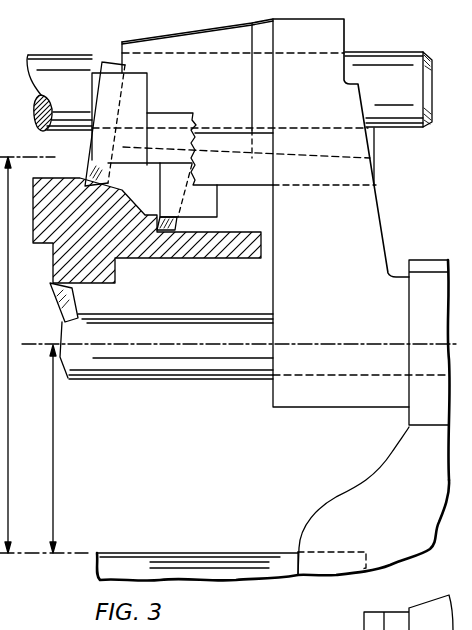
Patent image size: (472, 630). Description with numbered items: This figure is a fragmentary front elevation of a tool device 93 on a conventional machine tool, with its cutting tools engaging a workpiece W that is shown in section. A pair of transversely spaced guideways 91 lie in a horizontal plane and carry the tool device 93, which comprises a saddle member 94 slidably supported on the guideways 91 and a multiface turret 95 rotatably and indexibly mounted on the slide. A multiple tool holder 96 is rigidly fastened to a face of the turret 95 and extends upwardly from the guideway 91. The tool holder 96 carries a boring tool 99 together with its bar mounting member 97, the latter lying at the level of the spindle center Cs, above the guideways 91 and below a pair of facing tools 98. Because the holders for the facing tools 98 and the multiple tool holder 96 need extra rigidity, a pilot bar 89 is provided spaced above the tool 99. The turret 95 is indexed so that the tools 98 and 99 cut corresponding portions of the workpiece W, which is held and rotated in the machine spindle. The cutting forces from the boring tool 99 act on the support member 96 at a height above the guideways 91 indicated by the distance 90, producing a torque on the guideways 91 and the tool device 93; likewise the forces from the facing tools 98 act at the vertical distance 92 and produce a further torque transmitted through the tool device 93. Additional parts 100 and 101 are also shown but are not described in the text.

The pilot bar 89 is at (388, 35).
The distance 90 is at (54, 510).
The guideways 91 is at (252, 577).
The vertical distance 92 is at (9, 491).
The tool device 93 is at (308, 523).
The saddle member 94 is at (372, 484).
The multiface turret 95 is at (421, 416).
The multiple tool holder 96 is at (316, 33).
The bar mounting member 97 is at (213, 300).
The facing tools 98 is at (157, 208).
The boring tool 99 is at (75, 307).
The adjacent part 100 is at (426, 608).
The plate 101 is at (249, 187).
The workpiece W is at (143, 252).
The spindle center Cs is at (334, 344).